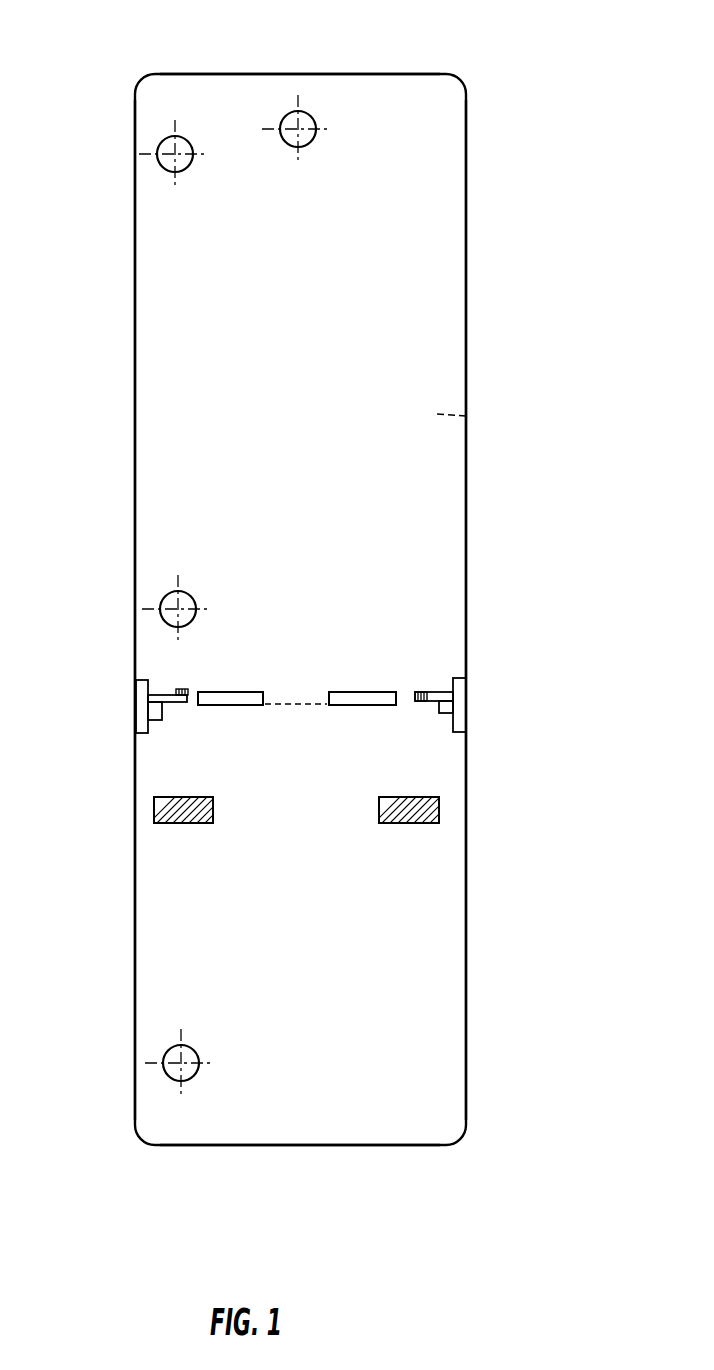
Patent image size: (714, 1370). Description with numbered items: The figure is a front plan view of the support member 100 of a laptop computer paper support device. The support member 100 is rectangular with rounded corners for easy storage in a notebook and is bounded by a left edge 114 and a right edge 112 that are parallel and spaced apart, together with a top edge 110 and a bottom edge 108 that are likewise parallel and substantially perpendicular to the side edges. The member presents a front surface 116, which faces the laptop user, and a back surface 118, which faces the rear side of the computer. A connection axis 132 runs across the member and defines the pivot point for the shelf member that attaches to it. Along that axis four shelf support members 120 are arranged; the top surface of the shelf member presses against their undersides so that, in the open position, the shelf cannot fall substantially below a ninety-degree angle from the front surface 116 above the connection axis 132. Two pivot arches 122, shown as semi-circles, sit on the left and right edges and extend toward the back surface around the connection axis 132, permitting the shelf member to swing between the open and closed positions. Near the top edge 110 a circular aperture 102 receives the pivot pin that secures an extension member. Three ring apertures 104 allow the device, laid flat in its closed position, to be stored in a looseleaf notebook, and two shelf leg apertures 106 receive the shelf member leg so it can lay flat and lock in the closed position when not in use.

The support member 100 is at (505, 220).
The circular aperture 102 is at (302, 110).
The ring apertures 104 is at (183, 170).
The shelf leg apertures 106 is at (190, 797).
The bottom edge 108 is at (331, 1147).
The top edge 110 is at (240, 74).
The right edge 112 is at (466, 580).
The left edge 114 is at (135, 505).
The front surface 116 is at (330, 415).
The back surface 118 is at (466, 416).
The shelf support members 120 is at (163, 690).
The pivot arches 122 is at (140, 700).
The connection axis 132 is at (283, 703).